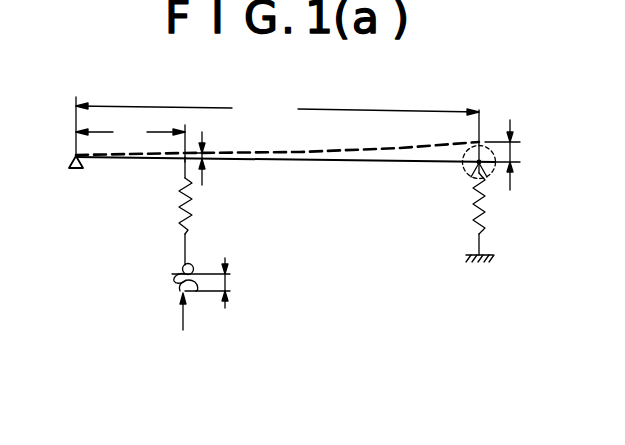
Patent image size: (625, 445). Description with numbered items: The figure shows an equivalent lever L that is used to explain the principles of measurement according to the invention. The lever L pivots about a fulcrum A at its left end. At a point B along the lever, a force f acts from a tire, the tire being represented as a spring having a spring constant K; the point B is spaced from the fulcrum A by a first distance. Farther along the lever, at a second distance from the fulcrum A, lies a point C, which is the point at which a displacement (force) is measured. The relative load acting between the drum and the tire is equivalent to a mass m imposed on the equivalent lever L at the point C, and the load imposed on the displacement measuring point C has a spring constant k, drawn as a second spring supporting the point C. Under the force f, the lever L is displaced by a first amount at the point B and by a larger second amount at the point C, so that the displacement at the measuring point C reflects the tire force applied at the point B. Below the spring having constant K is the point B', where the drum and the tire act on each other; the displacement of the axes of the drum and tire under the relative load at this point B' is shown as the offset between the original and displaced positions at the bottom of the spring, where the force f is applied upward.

The fulcrum A is at (73, 160).
The point where force acts from tire B is at (167, 174).
The point where drum and tire act on each other B' is at (175, 262).
The displacement measuring point C is at (474, 167).
The equivalent lever L is at (313, 161).
The spring constant of tire K is at (193, 205).
The spring constant of load at measuring point k is at (489, 215).
The mass m is at (496, 182).
The force from tire f is at (181, 323).